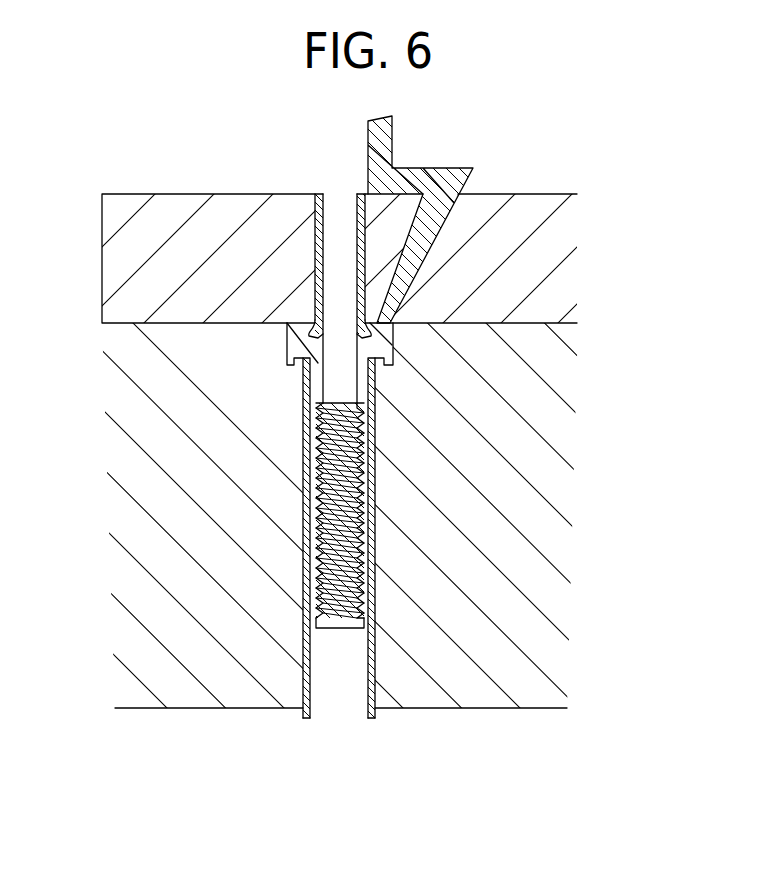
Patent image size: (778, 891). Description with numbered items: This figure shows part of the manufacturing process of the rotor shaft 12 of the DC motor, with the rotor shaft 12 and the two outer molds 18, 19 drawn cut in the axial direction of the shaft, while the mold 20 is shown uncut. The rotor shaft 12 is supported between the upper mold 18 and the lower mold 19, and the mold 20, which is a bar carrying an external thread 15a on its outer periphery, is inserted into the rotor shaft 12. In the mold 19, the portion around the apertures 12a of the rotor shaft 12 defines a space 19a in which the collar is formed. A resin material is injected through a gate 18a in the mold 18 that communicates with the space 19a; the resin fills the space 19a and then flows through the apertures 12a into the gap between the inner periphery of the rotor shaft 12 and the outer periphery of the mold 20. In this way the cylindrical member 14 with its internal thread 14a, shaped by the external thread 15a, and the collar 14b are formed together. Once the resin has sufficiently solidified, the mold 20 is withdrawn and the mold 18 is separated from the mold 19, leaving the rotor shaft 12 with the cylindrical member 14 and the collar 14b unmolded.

The rotor shaft 12 is at (373, 428).
The apertures 12a is at (318, 320).
The cylindrical member 14 is at (302, 381).
The internal thread 14a is at (356, 492).
The collar 14b is at (375, 345).
The external thread 15a is at (370, 589).
The mold 18 is at (546, 286).
The gate 18a is at (430, 222).
The mold 19 is at (545, 571).
The space 19a is at (393, 350).
The mold 20 is at (333, 675).